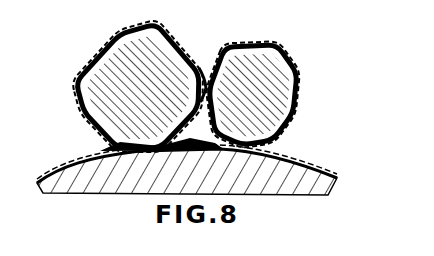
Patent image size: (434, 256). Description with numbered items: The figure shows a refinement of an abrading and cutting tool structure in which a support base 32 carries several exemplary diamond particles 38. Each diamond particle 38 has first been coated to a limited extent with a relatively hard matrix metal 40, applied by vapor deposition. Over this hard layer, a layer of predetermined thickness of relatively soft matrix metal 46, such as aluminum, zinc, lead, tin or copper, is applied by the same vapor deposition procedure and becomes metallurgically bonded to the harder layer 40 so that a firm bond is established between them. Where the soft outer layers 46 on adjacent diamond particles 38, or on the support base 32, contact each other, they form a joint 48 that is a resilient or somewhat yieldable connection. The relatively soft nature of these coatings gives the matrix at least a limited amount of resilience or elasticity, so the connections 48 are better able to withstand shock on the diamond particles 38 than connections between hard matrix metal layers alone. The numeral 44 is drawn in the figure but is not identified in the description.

The support base 32 is at (317, 178).
The diamond particles 38 is at (152, 83).
The relatively hard matrix metal 40 is at (107, 40).
The substrate surface 44 is at (92, 183).
The relatively soft matrix metal 46 is at (75, 88).
The joint 48 is at (205, 72).